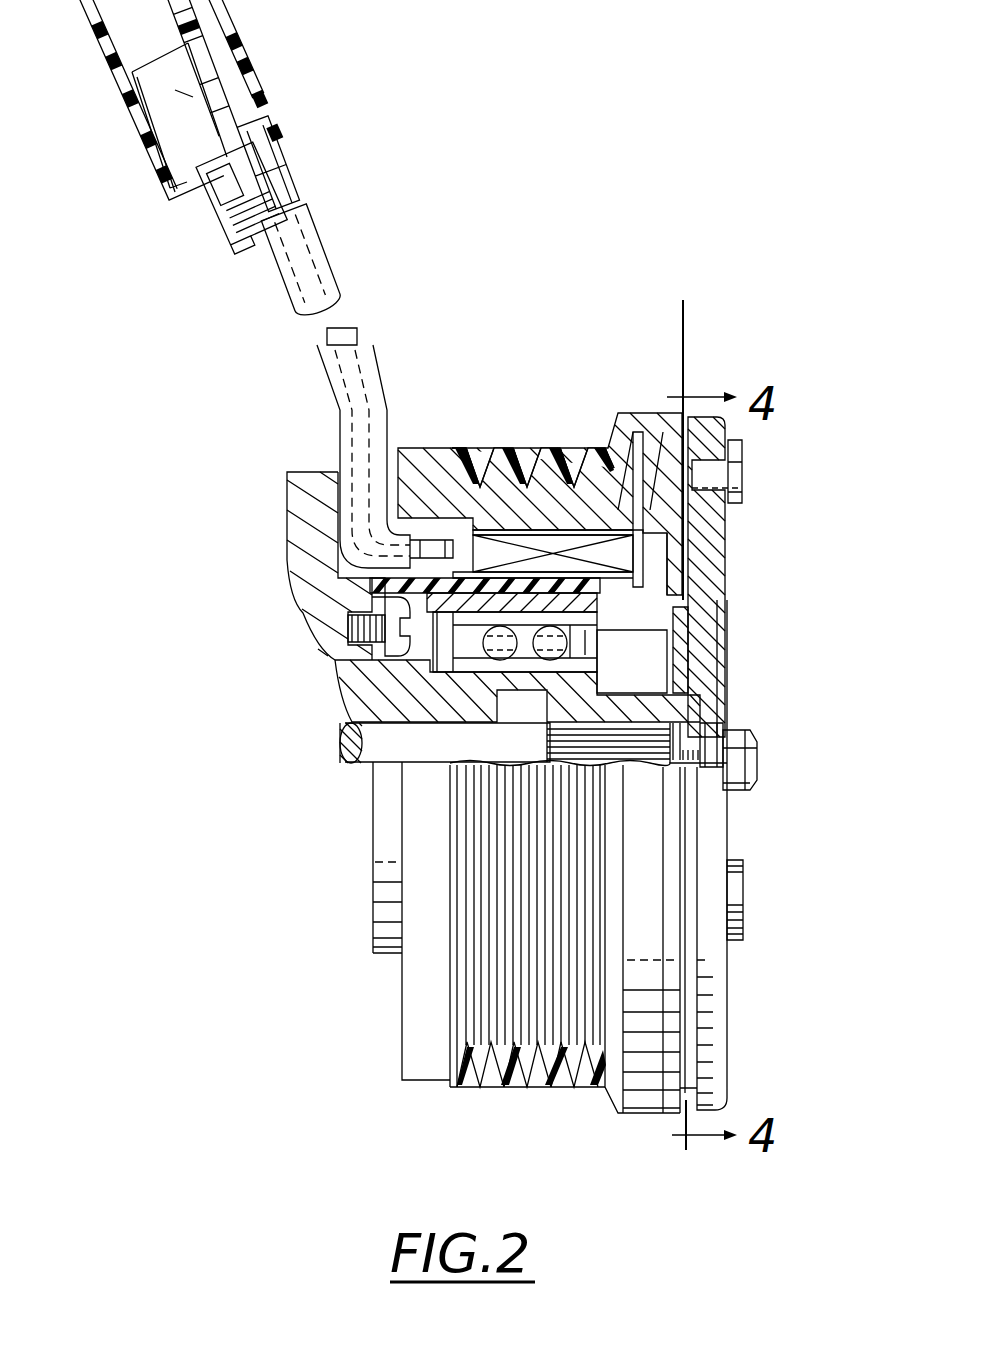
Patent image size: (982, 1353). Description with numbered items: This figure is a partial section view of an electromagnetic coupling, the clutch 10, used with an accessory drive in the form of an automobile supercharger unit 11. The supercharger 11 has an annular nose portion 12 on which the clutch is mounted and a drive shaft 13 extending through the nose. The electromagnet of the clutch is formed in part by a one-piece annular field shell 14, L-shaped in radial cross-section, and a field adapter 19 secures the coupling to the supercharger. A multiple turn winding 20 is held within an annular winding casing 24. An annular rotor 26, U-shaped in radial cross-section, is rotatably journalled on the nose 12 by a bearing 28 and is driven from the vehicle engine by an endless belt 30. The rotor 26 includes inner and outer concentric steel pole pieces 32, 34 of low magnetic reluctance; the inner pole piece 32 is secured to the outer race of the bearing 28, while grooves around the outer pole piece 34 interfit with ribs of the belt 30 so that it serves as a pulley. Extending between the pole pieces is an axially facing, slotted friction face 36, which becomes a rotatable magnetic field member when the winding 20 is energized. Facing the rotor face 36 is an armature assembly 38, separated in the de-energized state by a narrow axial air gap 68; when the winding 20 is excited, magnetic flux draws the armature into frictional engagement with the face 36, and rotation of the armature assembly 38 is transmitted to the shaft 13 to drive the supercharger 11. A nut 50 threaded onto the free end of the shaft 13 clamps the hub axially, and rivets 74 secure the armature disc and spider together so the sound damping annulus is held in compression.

The clutch 10 is at (520, 393).
The supercharger unit 11 is at (278, 547).
The annular nose portion 12 is at (380, 707).
The drive shaft 13 is at (373, 753).
The field shell 14 is at (367, 588).
The field adapter 19 is at (355, 650).
The winding 20 is at (618, 555).
The winding casing 24 is at (407, 530).
The rotor 26 is at (647, 597).
The bearing 28 is at (595, 640).
The endless belt 30 is at (533, 443).
The inner pole piece 32 is at (383, 703).
The outer pole piece 34 is at (422, 457).
The friction face 36 is at (670, 533).
The armature assembly 38 is at (748, 666).
The nut 50 is at (748, 762).
The air gap 68 is at (627, 315).
The rivets 74 is at (742, 468).